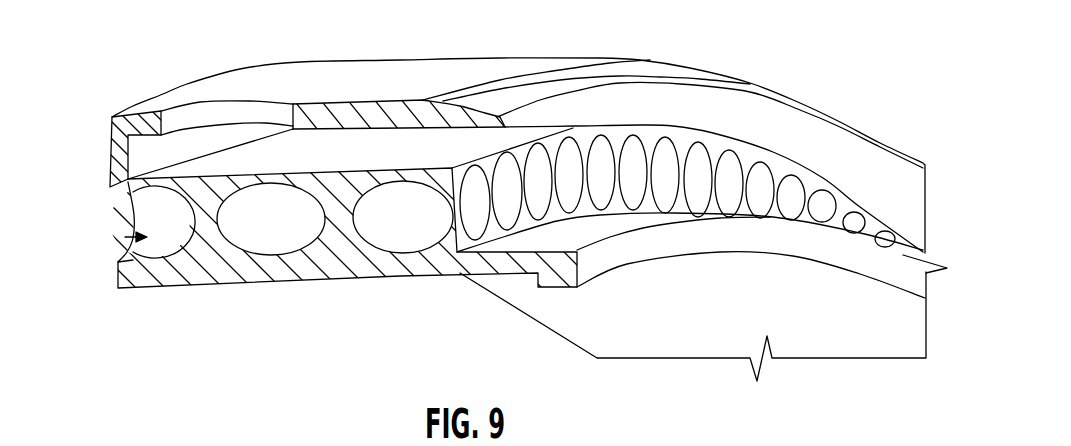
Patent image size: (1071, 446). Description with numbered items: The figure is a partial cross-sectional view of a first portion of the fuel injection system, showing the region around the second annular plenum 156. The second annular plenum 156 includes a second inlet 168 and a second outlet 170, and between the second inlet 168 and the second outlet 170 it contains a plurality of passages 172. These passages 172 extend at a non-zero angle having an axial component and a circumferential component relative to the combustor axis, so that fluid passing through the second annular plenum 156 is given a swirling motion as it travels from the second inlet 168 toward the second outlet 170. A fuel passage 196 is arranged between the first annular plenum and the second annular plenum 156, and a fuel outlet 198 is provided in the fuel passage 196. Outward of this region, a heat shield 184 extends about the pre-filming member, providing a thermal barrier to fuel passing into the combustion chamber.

The second annular plenum 156 is at (127, 247).
The second inlet 168 is at (118, 232).
The second outlet 170 is at (477, 213).
The plurality of passages 172 is at (273, 237).
The heat shield 184 is at (380, 113).
The fuel passage 196 is at (218, 160).
The fuel outlet 198 is at (262, 111).